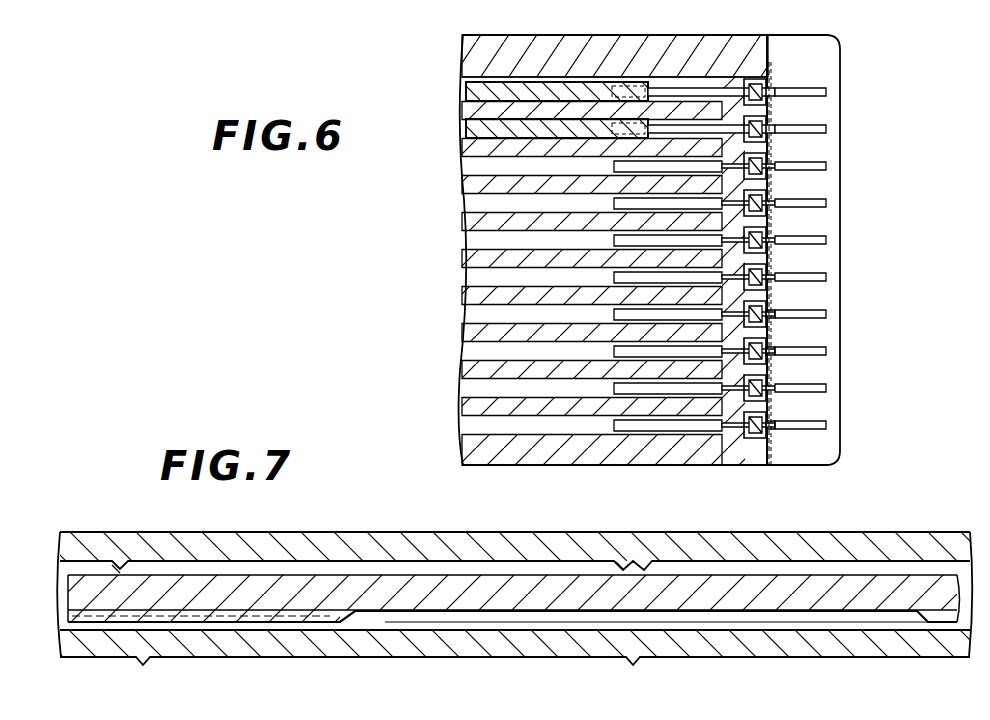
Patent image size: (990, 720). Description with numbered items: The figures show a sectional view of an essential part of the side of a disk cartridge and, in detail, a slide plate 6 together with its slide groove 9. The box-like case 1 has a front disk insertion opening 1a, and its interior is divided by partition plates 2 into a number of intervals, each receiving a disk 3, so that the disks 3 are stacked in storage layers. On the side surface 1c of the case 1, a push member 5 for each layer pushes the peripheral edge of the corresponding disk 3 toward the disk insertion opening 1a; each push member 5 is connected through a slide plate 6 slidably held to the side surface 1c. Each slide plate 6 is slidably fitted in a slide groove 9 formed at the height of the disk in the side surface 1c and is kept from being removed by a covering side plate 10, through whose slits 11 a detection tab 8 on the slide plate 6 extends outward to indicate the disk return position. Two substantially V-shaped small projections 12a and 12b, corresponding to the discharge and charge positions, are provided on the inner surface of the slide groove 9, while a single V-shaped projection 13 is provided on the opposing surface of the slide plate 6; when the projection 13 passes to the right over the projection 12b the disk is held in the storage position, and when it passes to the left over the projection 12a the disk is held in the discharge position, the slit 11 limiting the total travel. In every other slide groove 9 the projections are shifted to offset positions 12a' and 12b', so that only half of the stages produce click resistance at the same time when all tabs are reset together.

In FIG. 6, the case 1 is at (585, 35).
In FIG. 6, the disk insertion opening 1a is at (470, 303).
In FIG. 6, the side surface 1c is at (861, 138).
In FIG. 7, the side surface 1c is at (418, 551).
In FIG. 6, the partition plates 2 is at (482, 187).
In FIG. 6, the disks 3 is at (492, 132).
In FIG. 6, the push member 5 is at (678, 388).
In FIG. 6, the slide plate 6 is at (750, 400).
In FIG. 7, the slide plate 6 is at (835, 615).
In FIG. 6, the detection tab 8 is at (812, 202).
In FIG. 6, the slide groove 9 is at (785, 254).
In FIG. 7, the slide groove 9 is at (805, 562).
In FIG. 6, the side plate 10 is at (770, 150).
In FIG. 6, the slit 11 is at (795, 128).
In FIG. 6, the projection 12a is at (838, 306).
In FIG. 7, the projection 12a is at (230, 673).
In FIG. 6, the projection 12a' is at (844, 388).
In FIG. 7, the projection 12a' is at (197, 627).
In FIG. 7, the projection 12b is at (685, 673).
In FIG. 7, the projection 12b' is at (595, 626).
In FIG. 7, the projection 13 is at (115, 563).